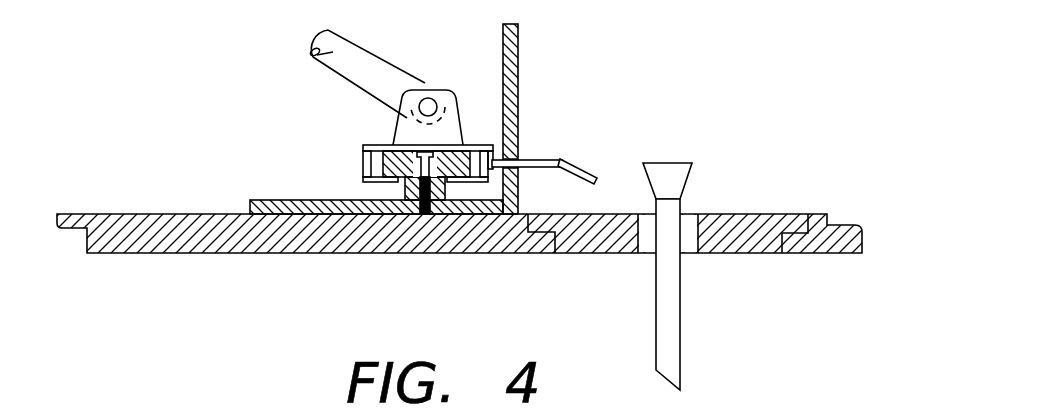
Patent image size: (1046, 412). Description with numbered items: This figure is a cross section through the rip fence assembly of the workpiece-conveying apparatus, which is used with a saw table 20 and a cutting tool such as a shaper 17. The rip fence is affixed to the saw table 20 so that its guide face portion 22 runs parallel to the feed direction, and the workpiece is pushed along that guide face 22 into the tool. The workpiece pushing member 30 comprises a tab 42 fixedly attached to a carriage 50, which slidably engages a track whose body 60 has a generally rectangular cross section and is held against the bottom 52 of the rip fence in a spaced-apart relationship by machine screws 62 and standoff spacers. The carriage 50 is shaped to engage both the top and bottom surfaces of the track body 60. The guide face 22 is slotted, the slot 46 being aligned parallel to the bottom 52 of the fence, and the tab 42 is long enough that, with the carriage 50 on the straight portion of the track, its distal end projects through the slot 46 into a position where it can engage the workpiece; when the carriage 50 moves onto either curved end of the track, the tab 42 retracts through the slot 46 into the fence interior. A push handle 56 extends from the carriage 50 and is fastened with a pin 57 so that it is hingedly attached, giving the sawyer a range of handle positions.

The shaper 17 is at (684, 178).
The saw table 20 is at (148, 214).
The guide face portion 22 is at (518, 87).
The workpiece pushing member 30 is at (552, 150).
The tab 42 is at (563, 160).
The slot 46 is at (520, 170).
The carriage 50 is at (363, 147).
The bottom of rip fence 52 is at (272, 205).
The push handle 56 is at (312, 57).
The pin 57 is at (428, 104).
The body 60 is at (395, 168).
The machine screws 62 is at (428, 180).